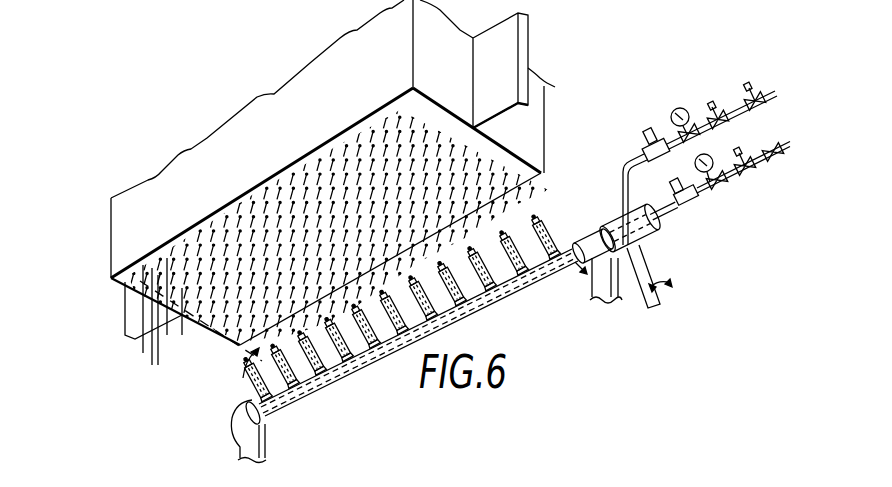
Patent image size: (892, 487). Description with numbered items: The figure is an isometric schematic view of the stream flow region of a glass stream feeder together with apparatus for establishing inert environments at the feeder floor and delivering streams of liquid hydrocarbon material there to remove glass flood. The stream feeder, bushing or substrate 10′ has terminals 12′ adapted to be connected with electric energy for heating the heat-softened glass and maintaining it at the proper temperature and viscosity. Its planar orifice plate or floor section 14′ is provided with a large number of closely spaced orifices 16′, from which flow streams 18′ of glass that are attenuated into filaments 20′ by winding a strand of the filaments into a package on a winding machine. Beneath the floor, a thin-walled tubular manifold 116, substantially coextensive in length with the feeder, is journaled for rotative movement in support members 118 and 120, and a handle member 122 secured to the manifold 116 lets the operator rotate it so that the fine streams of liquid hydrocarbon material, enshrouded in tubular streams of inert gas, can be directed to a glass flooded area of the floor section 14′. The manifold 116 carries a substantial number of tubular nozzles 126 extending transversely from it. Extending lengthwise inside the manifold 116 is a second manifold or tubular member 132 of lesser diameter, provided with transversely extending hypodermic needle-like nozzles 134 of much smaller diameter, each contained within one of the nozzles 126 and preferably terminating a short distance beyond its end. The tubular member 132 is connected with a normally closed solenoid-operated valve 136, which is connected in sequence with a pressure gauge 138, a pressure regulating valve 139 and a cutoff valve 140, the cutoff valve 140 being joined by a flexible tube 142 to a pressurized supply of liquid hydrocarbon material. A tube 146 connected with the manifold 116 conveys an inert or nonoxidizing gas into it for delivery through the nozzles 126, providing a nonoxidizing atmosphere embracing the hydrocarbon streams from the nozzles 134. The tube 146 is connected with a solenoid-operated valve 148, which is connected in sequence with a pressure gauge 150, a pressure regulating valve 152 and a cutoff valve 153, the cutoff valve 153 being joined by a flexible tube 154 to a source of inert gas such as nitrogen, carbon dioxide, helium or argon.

The stream feeder 10′ is at (107, 238).
The terminals 12′ is at (530, 38).
The orifice plate 14′ is at (158, 257).
The orifices 16′ is at (366, 135).
The streams 18′ is at (268, 200).
The filaments 20′ is at (232, 353).
The tubular manifold 116 is at (375, 362).
The support member 118 is at (604, 300).
The support member 120 is at (240, 442).
The handle member 122 is at (648, 305).
The tubular nozzles 126 is at (343, 367).
The second manifold 132 is at (397, 345).
The hypodermic needle-like nozzles 134 is at (313, 338).
The solenoid-operated valve 136 is at (685, 203).
The pressure gauge 138 is at (772, 158).
The pressure regulating valve 139 is at (712, 173).
The cutoff valve 140 is at (745, 170).
The flexible tube 142 is at (778, 140).
The tubular member 146 is at (625, 166).
The solenoid-operated valve 148 is at (641, 143).
The pressure gauge 150 is at (670, 112).
The pressure regulating valve 152 is at (708, 100).
The cutoff valve 153 is at (743, 95).
The flexible tube 154 is at (770, 83).